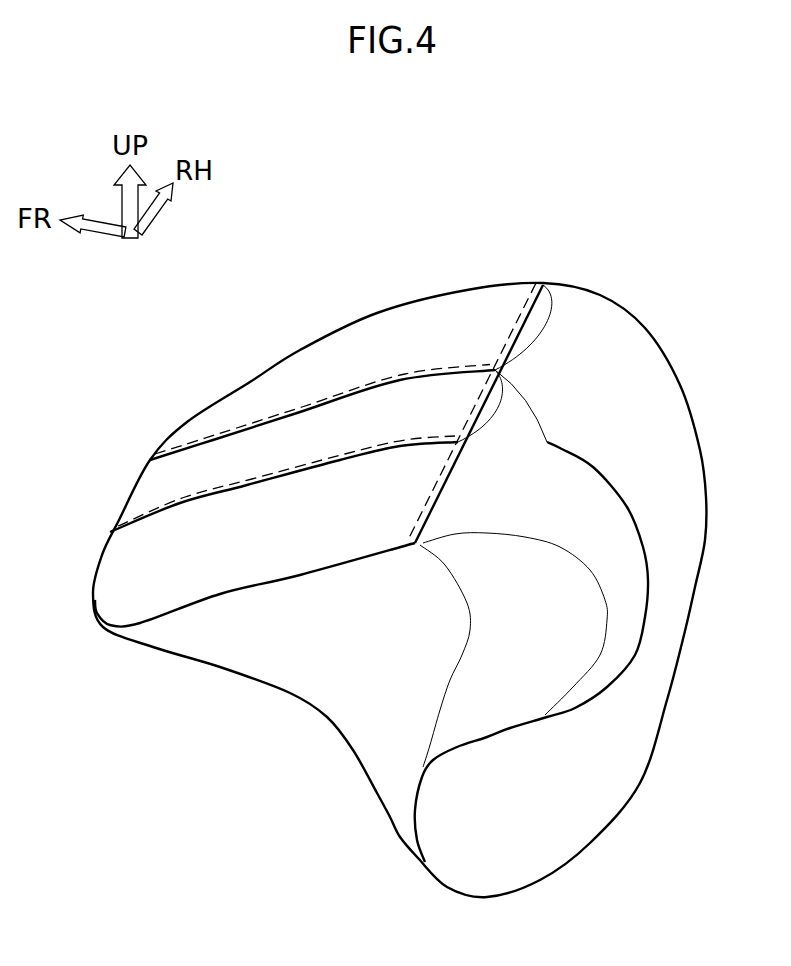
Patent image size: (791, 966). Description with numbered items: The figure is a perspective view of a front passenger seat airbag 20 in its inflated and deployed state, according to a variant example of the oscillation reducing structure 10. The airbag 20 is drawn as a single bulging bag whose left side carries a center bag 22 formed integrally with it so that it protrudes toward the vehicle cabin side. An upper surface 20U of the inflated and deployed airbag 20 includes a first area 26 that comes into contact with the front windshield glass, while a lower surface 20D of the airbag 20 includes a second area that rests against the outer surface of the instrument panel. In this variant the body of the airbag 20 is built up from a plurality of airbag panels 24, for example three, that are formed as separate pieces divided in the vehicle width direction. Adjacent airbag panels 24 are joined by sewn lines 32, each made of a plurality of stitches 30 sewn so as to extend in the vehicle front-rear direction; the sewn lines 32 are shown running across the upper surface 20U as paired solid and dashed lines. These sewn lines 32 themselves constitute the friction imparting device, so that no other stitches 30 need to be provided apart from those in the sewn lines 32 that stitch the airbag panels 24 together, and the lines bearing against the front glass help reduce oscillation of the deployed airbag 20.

The oscillation reducing structure 10 is at (455, 332).
The front passenger seat airbag 20 is at (666, 318).
The upper surface 20U is at (540, 302).
The lower surface 20D is at (395, 829).
The center bag 22 is at (623, 585).
The airbag panel 24 is at (375, 333).
The first area 26 is at (195, 460).
The stitch 30 is at (293, 407).
The sewn line 32 is at (252, 410).